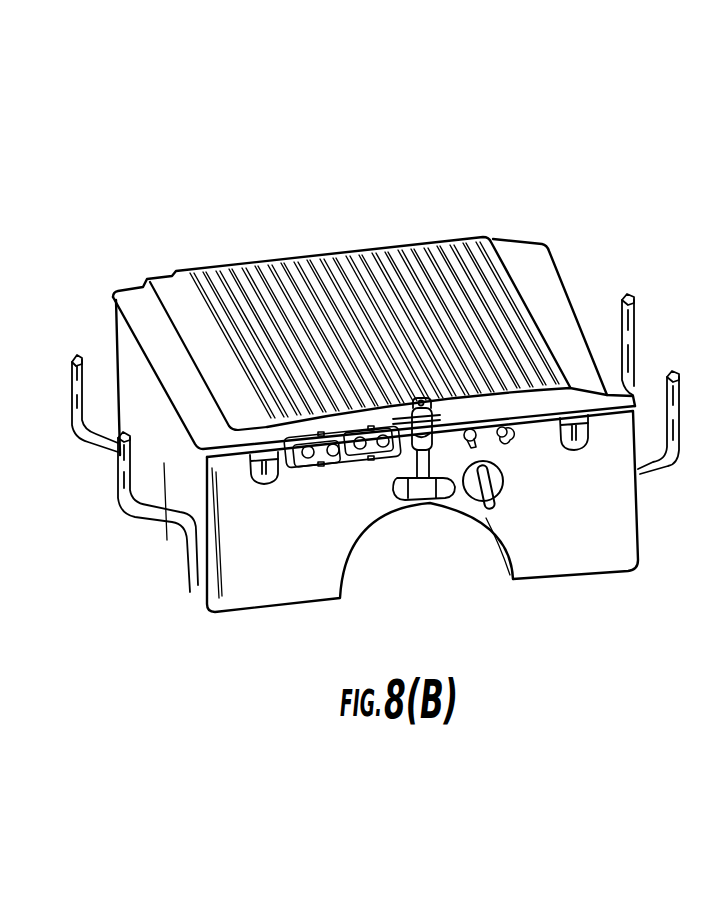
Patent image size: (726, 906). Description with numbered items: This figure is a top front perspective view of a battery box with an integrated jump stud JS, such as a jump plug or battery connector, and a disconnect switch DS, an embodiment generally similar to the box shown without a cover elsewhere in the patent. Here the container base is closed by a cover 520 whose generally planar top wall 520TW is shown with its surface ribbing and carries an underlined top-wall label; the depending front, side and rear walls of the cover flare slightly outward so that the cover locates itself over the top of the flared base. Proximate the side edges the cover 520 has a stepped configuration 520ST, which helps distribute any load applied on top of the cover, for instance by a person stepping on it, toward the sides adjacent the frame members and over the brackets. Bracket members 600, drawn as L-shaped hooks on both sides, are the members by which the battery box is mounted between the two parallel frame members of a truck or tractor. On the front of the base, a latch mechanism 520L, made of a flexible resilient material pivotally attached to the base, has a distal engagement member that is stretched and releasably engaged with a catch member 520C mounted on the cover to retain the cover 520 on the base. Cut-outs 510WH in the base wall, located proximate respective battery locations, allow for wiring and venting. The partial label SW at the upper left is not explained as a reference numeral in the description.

The cover 520 is at (374, 298).
The stepped configuration 520ST is at (162, 272).
The top wall 520TW is at (395, 317).
The catch member 520C is at (426, 391).
The latch mechanism 520L is at (438, 446).
The bracket members 600 is at (663, 364).
The cut-outs 510WH is at (264, 485).
The jump stud JS is at (468, 448).
The disconnect switch DS is at (497, 514).
The switch SW is at (0, 226).